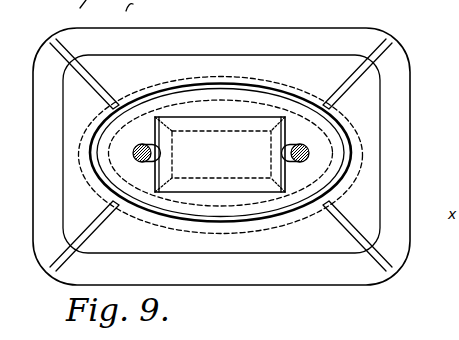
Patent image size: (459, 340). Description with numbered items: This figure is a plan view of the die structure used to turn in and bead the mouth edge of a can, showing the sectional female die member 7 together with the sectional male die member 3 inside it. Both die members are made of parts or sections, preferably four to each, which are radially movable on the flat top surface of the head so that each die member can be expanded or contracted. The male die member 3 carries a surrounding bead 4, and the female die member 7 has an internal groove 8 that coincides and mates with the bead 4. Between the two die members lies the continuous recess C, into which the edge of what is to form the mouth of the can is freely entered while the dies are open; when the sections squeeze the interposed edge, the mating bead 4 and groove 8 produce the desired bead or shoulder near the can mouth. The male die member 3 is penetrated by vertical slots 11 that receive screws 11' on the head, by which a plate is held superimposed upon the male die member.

The sectional male die member 3 is at (262, 105).
The bead 4 is at (141, 103).
The sectional female die member 7 is at (374, 39).
The internal groove 8 is at (155, 227).
The vertical slots 11 is at (165, 153).
The screws 11' is at (281, 153).
The continuous recess C is at (357, 163).